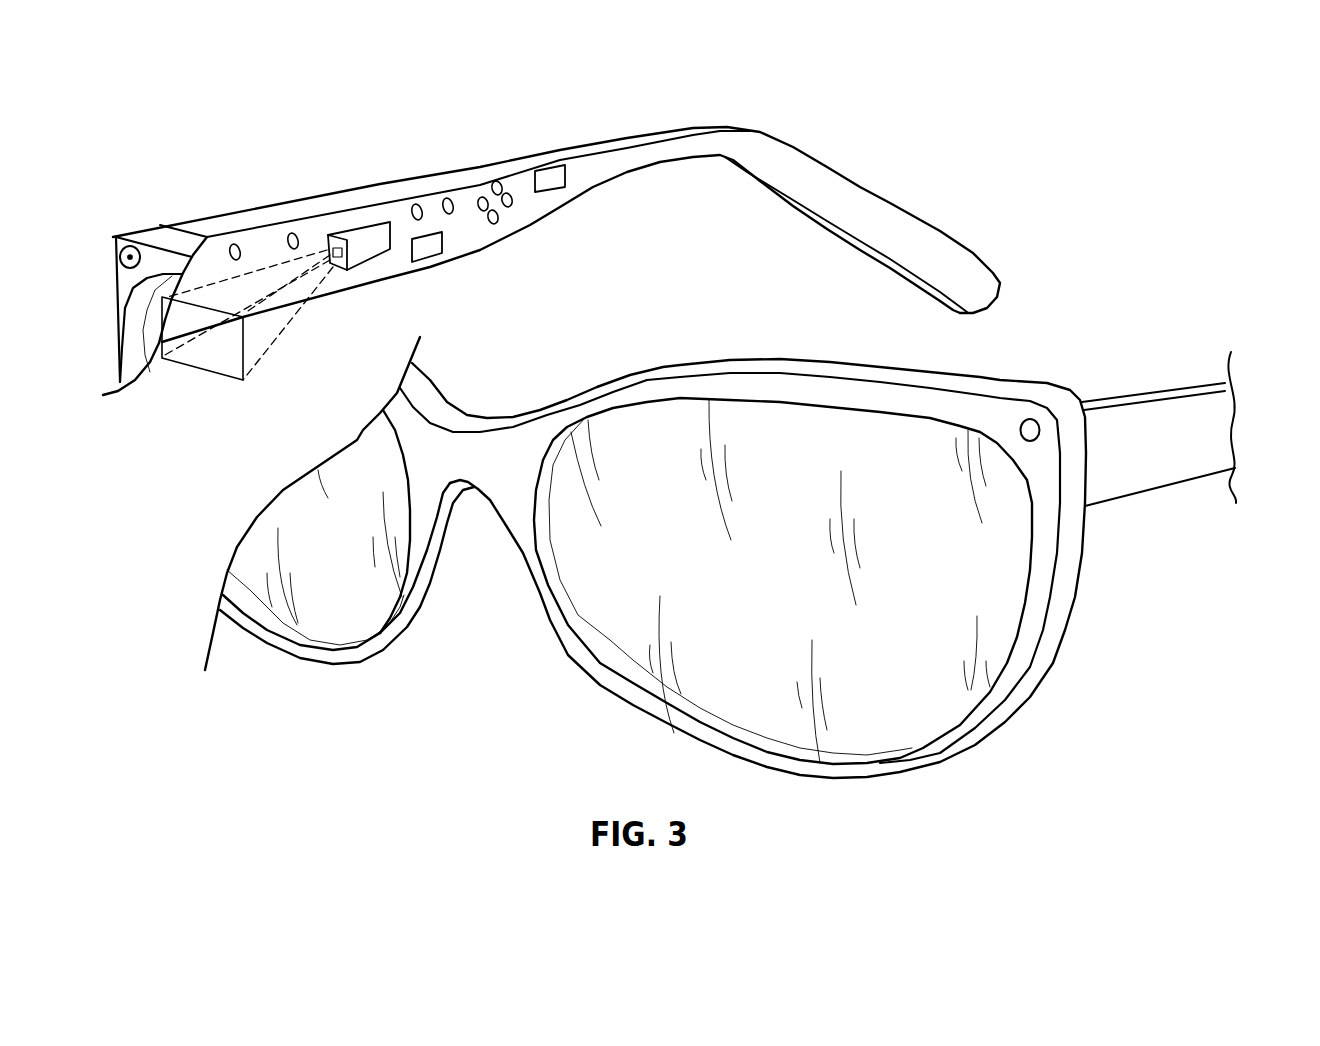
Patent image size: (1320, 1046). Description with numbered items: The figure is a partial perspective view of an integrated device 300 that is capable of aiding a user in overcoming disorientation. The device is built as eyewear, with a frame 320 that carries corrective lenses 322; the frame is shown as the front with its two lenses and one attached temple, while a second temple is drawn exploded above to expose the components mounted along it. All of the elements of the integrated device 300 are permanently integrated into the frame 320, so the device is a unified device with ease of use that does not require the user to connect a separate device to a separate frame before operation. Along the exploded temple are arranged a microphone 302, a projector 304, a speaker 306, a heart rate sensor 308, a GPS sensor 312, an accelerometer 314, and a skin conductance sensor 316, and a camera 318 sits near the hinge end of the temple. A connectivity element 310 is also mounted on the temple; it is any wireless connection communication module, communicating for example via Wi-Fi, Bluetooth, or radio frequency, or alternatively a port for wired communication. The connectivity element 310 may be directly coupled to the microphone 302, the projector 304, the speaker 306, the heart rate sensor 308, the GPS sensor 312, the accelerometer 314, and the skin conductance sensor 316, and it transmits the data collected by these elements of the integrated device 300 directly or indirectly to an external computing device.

The integrated device 300 is at (1172, 90).
The microphone 302 is at (235, 243).
The projector 304 is at (348, 235).
The speaker 306 is at (491, 182).
The heart rate sensor 308 is at (448, 199).
The connectivity element 310 is at (434, 255).
The GPS sensor 312 is at (417, 205).
The accelerometer 314 is at (293, 233).
The skin conductance sensor 316 is at (550, 170).
The camera 318 is at (115, 237).
The frame 320 is at (178, 229).
The corrective lenses 322 is at (325, 628).